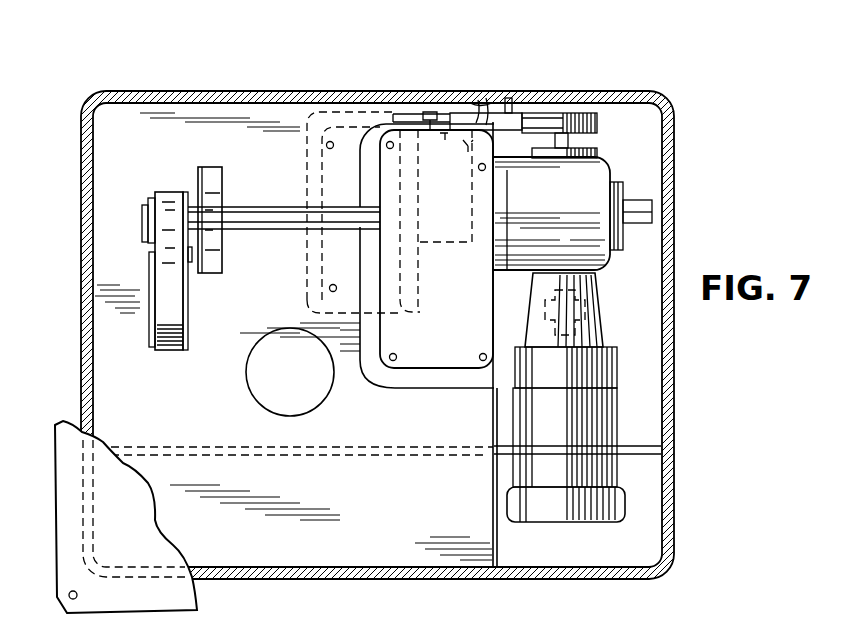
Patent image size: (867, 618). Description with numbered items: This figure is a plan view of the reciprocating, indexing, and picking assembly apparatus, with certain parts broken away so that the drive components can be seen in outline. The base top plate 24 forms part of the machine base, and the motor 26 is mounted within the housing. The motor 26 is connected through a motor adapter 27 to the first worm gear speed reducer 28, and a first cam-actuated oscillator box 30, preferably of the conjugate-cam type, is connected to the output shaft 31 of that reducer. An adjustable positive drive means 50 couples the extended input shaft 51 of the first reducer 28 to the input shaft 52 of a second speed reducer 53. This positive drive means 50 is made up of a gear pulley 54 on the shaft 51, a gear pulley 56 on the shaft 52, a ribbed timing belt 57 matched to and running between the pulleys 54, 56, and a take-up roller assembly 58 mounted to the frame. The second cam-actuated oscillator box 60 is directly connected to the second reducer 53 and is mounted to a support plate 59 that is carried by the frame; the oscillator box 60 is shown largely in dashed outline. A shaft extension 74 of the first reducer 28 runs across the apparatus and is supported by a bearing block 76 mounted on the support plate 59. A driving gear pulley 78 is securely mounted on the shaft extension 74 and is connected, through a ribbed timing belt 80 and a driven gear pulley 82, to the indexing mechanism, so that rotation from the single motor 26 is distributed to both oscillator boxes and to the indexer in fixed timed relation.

The base top plate 24 is at (180, 593).
The motor 26 is at (620, 470).
The motor adapter 27 is at (603, 333).
The first worm gear speed reducer 28 is at (612, 160).
The first cam-actuated oscillator box 30 is at (507, 245).
The output shaft 31 is at (652, 210).
The adjustable positive drive means 50 is at (538, 104).
The extended input shaft 51 is at (560, 110).
The input shaft 52 is at (428, 112).
The second speed reducer 53 is at (479, 102).
The gear pulley 54 is at (598, 114).
The gear pulley 56 is at (398, 113).
The ribbed timing belt 57 is at (490, 104).
The take-up roller assembly 58 is at (523, 112).
The support plate 59 is at (360, 493).
The second cam-actuated oscillator box 60 is at (338, 108).
The shaft extension 74 is at (272, 229).
The bearing block 76 is at (216, 168).
The driving gear pulley 78 is at (156, 192).
The ribbed timing belt 80 is at (148, 255).
The driven gear pulley 82 is at (153, 350).